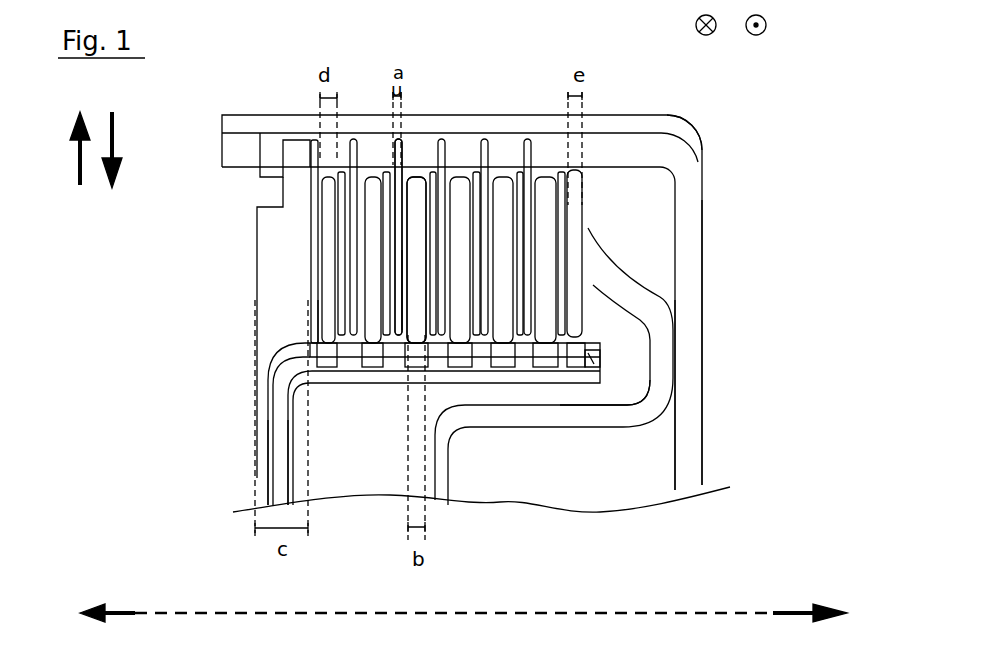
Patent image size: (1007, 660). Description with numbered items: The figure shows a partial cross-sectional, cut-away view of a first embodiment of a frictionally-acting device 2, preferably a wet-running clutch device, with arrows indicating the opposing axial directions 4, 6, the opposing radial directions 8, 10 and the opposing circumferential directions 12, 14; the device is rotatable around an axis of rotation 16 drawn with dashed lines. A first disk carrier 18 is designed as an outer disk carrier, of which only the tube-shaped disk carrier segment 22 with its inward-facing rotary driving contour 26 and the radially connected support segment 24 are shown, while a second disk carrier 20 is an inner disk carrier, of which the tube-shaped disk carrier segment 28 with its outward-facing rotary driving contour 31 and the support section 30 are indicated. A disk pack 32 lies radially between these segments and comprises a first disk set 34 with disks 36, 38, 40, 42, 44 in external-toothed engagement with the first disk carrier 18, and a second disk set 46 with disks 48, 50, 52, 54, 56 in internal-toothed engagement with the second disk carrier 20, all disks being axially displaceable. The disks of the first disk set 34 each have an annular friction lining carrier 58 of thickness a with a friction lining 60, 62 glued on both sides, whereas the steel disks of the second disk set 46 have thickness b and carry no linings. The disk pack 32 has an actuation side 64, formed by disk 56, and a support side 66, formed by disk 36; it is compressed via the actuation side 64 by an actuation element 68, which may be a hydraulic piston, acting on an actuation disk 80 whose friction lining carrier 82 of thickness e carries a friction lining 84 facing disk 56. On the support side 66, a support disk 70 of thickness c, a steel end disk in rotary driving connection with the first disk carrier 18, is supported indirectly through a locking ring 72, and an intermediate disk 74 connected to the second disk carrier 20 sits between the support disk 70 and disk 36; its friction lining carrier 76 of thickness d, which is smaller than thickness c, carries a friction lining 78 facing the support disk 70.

The frictionally-acting device 2 is at (790, 105).
The axial direction 4 is at (803, 606).
The axial direction 6 is at (128, 604).
The radial direction 8 is at (77, 158).
The radial direction 10 is at (114, 136).
The circumferential direction 12 is at (768, 23).
The circumferential direction 14 is at (694, 23).
The axis of rotation 16 is at (690, 612).
The first disk carrier 18 is at (704, 150).
The second disk carrier 20 is at (266, 376).
The disk carrier segment 22 is at (622, 127).
The support segment 24 is at (688, 432).
The rotary driving contour 26 is at (550, 152).
The disk carrier segment 28 is at (360, 375).
The support section 30 is at (272, 482).
The rotary driving contour 31 is at (565, 352).
The disk pack 32 is at (425, 253).
The first disk set 34 is at (441, 170).
The disk 36 is at (351, 136).
The disk 38 is at (401, 138).
The disk 40 is at (441, 136).
The disk 42 is at (486, 136).
The disk 44 is at (528, 136).
The second disk set 46 is at (469, 394).
The disk 48 is at (375, 364).
The disk 50 is at (416, 364).
The disk 52 is at (462, 364).
The disk 54 is at (505, 364).
The disk 56 is at (553, 364).
The friction lining carrier 58 is at (397, 235).
The friction lining 60 is at (403, 287).
The friction lining 62 is at (390, 208).
The actuation side 64 is at (565, 237).
The support side 66 is at (337, 275).
The actuation element 68 is at (660, 382).
The support disk 70 is at (272, 268).
The locking ring 72 is at (268, 152).
The intermediate disk 74 is at (310, 322).
The friction lining carrier 76 is at (330, 192).
The friction lining 78 is at (320, 303).
The actuation disk 80 is at (575, 261).
The friction lining carrier 82 is at (575, 249).
The friction lining 84 is at (560, 288).